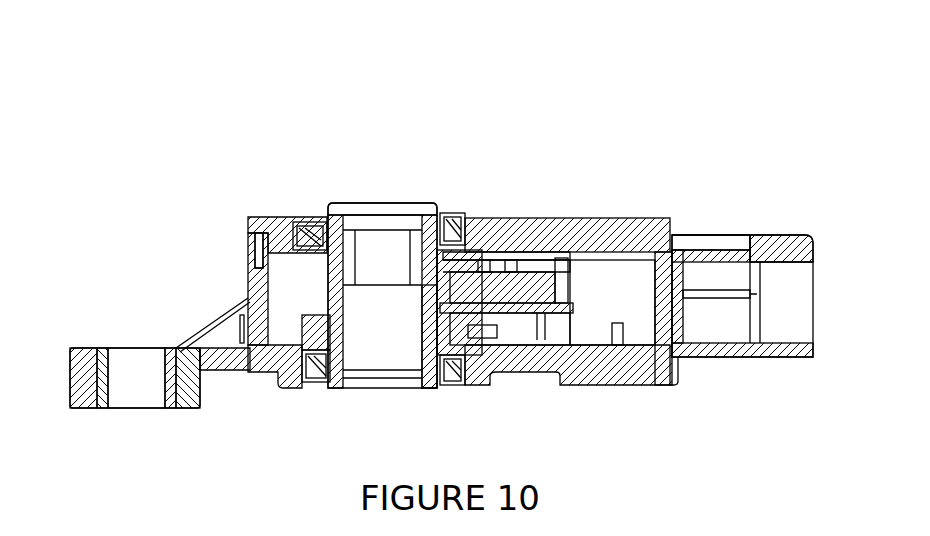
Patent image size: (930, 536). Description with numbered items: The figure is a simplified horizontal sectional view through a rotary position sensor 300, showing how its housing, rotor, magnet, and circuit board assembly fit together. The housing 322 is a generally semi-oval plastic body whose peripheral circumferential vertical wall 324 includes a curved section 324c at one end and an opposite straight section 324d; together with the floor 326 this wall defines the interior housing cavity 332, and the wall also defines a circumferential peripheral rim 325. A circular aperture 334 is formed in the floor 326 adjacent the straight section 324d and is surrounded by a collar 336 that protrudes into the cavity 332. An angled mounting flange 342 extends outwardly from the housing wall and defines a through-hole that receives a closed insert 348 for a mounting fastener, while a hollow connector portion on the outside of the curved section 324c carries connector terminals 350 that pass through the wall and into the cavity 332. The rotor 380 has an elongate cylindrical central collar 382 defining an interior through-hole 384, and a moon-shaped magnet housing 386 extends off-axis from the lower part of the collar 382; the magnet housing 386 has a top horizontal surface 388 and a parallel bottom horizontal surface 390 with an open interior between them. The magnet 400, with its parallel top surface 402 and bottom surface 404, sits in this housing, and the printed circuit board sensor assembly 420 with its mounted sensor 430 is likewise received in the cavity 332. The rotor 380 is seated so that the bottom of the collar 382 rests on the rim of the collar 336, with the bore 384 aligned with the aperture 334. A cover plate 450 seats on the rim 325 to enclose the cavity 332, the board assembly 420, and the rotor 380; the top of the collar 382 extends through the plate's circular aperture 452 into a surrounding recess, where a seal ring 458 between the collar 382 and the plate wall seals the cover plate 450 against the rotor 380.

The rotary position sensor 300 is at (562, 112).
The housing 322 is at (633, 393).
The peripheral circumferential vertical wall 324 is at (262, 280).
The curved section 324c is at (696, 357).
The straight section 324d is at (248, 287).
The circumferential peripheral rim 325 is at (678, 242).
The floor 326 is at (560, 300).
The interior housing cavity 332 is at (664, 230).
The circular aperture 334 is at (424, 355).
The collar 336 is at (312, 340).
The angled mounting flange 342 is at (72, 380).
The insert 348 is at (103, 400).
The connector terminals 350 is at (723, 300).
The rotor 380 is at (376, 199).
The central collar 382 is at (330, 225).
The through-hole 384 is at (346, 330).
The magnet housing 386 is at (597, 326).
The top horizontal surface 388 is at (534, 246).
The bottom horizontal surface 390 is at (568, 320).
The magnet 400 is at (498, 268).
The top surface 402 is at (545, 262).
The bottom surface 404 is at (485, 335).
The printed circuit board sensor assembly 420 is at (594, 322).
The sensor 430 is at (463, 368).
The cover plate 450 is at (269, 210).
The circular aperture 452 is at (258, 246).
The seal ring 458 is at (455, 235).